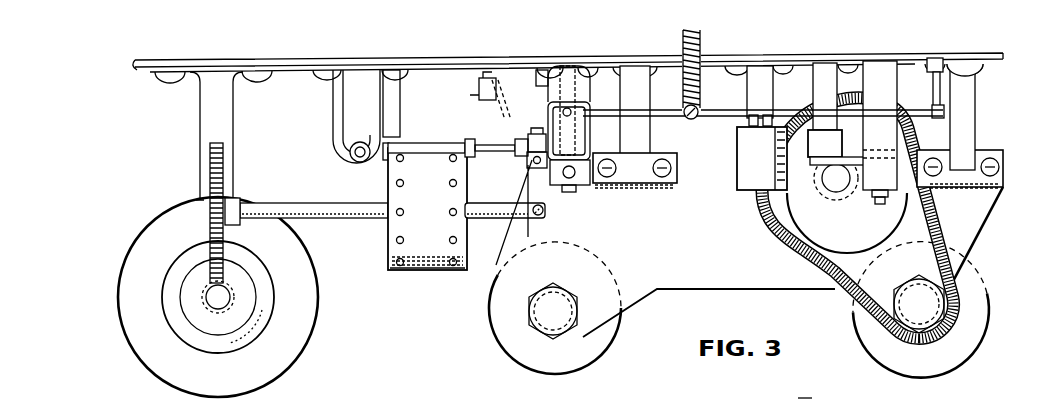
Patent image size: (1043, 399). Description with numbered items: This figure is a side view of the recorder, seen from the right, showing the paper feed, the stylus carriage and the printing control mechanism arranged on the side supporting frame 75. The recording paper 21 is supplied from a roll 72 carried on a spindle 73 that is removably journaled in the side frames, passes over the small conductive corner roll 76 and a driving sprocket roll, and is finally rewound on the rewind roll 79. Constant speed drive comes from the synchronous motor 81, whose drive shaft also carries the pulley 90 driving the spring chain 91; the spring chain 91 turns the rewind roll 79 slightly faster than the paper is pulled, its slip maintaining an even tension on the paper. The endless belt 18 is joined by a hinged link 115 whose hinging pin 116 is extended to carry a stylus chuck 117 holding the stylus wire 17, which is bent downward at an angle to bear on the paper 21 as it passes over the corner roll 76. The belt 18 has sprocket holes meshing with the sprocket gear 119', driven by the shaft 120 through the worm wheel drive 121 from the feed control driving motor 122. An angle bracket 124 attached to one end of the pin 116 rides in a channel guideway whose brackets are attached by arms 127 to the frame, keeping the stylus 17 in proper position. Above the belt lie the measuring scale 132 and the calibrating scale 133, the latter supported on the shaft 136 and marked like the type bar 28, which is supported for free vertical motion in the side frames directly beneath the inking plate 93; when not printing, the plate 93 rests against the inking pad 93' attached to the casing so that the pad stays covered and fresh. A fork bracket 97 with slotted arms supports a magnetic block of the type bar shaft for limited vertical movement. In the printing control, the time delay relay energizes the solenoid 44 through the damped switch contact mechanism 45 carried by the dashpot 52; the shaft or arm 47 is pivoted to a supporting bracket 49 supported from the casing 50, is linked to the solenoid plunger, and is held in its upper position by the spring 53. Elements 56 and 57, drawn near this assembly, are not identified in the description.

The stylus wire 17 is at (535, 153).
The endless belt 18 is at (428, 271).
The recording paper 21 is at (660, 153).
The type bar 28 is at (567, 192).
The solenoid 44 is at (738, 172).
The damped switch contact mechanism 45 is at (877, 166).
The shaft or arm 47 is at (723, 116).
The supporting bracket 49 is at (976, 94).
The casing or support 50 is at (938, 62).
The dashpot 52 is at (810, 158).
The spring 53 is at (698, 68).
The bracket 56 is at (556, 84).
The slide bar 57 is at (558, 135).
The roll 72 is at (607, 354).
The spindle 73 is at (552, 312).
The side supporting frame 75 is at (773, 290).
The corner roll 76 is at (531, 151).
The rewind roll 79 is at (989, 316).
The synchronous motor 81 is at (806, 398).
The pulley 90 is at (770, 218).
The spring chain 91 is at (937, 222).
The inking plate 93 is at (489, 105).
The inking pad 93' is at (469, 91).
The fork bracket 97 is at (585, 104).
The hinged link 115 is at (437, 143).
The hinging pin 116 is at (495, 152).
The stylus chuck 117 is at (519, 140).
The sprocket gear 119' is at (411, 283).
The shaft 120 is at (347, 220).
The worm wheel drive 121 is at (216, 300).
The feed control driving motor 122 is at (130, 344).
The angle bracket 124 is at (384, 160).
The arm 127 is at (490, 220).
The measuring scale 132 is at (400, 95).
The calibrating scale 133 is at (352, 142).
The shaft 136 is at (350, 152).